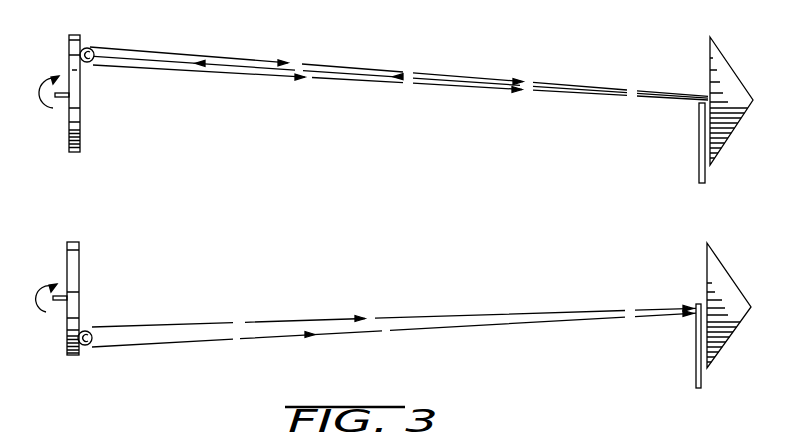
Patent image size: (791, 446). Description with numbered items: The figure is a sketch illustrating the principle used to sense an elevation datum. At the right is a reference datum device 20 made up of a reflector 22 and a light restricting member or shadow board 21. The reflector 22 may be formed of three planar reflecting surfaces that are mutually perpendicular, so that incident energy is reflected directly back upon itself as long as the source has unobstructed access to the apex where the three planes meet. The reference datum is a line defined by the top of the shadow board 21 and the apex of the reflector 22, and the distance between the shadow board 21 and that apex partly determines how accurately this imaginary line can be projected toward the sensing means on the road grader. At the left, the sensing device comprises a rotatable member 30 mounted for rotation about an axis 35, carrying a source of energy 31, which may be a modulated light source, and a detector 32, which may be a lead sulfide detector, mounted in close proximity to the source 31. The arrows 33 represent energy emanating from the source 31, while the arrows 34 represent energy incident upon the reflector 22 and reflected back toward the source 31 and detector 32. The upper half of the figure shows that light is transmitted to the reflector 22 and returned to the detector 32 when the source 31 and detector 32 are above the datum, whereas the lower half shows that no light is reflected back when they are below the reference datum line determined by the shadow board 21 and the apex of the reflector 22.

The reference datum device 20 is at (745, 41).
The light restricting member or shadow board 21 is at (698, 118).
The reflector 22 is at (742, 110).
The rotatable member 30 is at (80, 125).
The source of energy 31 is at (86, 63).
The detector 32 is at (92, 47).
The arrows 33 is at (199, 68).
The arrows 34 is at (163, 71).
The axis 35 is at (54, 110).